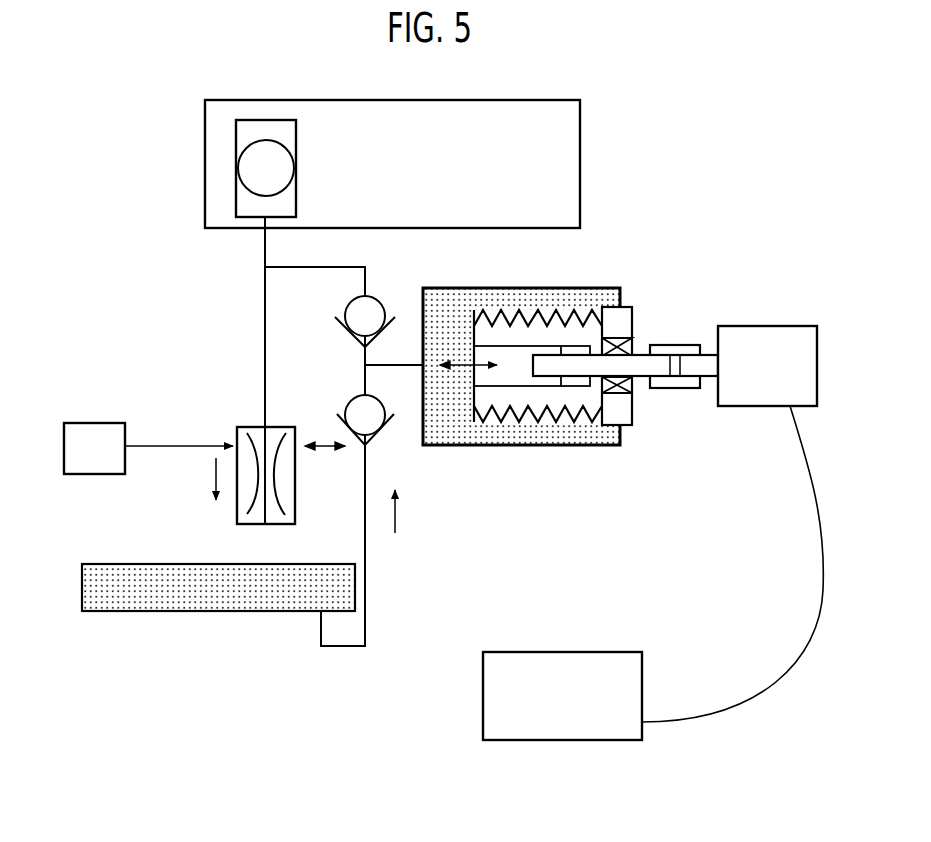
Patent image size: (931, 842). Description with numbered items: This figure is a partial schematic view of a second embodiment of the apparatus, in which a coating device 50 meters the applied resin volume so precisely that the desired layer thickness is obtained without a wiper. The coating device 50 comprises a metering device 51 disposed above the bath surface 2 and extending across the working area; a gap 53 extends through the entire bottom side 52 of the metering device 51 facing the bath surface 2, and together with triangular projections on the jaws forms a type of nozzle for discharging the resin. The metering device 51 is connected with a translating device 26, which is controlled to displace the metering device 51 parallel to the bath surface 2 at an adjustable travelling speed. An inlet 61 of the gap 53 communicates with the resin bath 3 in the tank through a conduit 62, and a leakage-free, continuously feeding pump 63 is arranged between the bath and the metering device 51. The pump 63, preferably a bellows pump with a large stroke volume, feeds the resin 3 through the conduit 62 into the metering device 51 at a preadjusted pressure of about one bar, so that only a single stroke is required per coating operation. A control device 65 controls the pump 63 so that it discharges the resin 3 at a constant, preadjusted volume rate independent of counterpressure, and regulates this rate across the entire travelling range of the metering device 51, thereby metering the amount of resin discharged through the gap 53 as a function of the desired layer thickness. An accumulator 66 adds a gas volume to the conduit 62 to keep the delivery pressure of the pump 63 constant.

The bath surface 2 is at (120, 563).
The resin bath 3 is at (296, 598).
The translating device 26 is at (88, 423).
The coating device 50 is at (212, 327).
The metering device 51 is at (237, 430).
The bottom side 52 is at (245, 523).
The gap 53 is at (276, 518).
The inlet 61 is at (272, 434).
The conduit 62 is at (265, 347).
The pump 63 is at (506, 452).
The control device 65 is at (598, 742).
The accumulator 66 is at (296, 185).